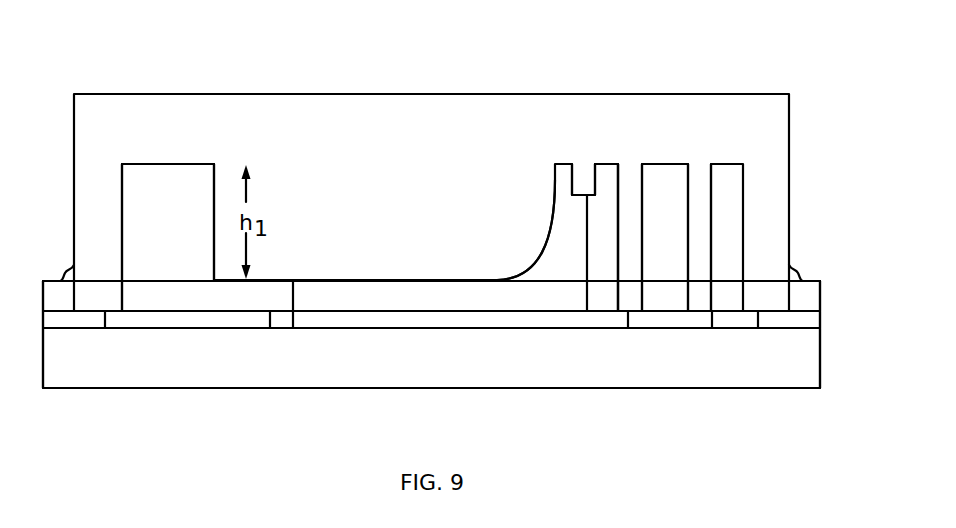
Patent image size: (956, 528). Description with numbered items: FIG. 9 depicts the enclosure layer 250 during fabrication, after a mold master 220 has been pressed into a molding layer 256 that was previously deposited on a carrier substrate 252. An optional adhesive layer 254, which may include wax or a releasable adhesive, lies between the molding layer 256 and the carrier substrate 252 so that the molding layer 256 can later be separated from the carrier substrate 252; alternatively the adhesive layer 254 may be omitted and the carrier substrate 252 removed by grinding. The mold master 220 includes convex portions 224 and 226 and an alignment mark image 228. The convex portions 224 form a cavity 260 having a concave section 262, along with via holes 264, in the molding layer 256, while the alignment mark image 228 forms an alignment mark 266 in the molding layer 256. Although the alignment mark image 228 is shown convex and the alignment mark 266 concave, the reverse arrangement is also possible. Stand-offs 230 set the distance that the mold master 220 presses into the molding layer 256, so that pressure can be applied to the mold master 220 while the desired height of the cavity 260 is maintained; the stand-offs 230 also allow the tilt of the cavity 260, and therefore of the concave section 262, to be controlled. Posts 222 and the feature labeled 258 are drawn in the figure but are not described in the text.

The mold master 220 is at (135, 94).
The posts 222 is at (152, 202).
The convex portions 224 is at (293, 328).
The convex portions 226 is at (712, 328).
The alignment mark image 228 is at (587, 230).
The stand-offs 230 is at (105, 328).
The enclosure layer 250 is at (412, 28).
The carrier substrate 252 is at (400, 388).
The adhesive layer 254 is at (270, 328).
The molding layer 256 is at (59, 272).
The pedestal 258 is at (172, 140).
The cavity 260 is at (512, 225).
The concave section 262 is at (431, 238).
The via holes 264 is at (626, 158).
The alignment mark 266 is at (583, 158).